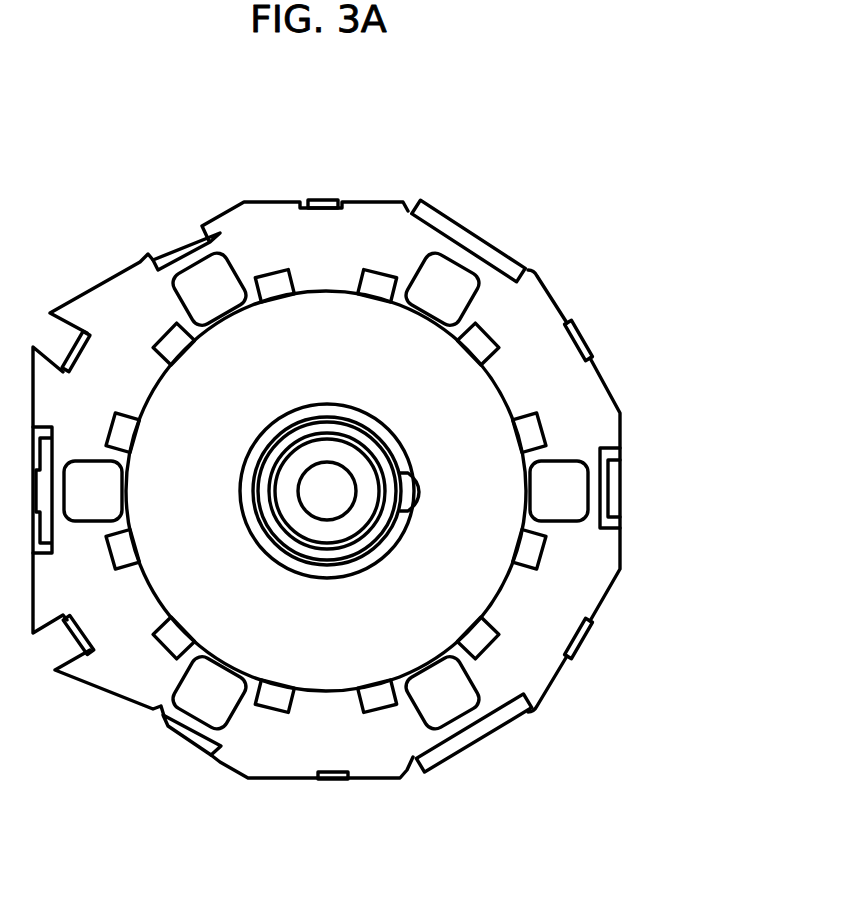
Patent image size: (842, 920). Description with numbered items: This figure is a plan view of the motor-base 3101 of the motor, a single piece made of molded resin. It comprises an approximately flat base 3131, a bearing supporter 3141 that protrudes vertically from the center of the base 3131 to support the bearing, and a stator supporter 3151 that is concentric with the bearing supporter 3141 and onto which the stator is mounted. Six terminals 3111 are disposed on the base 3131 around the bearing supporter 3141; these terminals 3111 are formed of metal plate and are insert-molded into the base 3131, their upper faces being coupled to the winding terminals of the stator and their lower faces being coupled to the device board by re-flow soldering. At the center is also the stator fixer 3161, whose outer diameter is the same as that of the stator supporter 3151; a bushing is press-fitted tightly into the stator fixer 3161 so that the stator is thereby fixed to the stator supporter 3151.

The motor-base 3101 is at (317, 193).
The terminals 3111 is at (563, 490).
The base 3131 is at (293, 750).
The bearing supporter 3141 is at (280, 477).
The stator supporter 3151 is at (401, 491).
The stator fixer 3161 is at (397, 523).